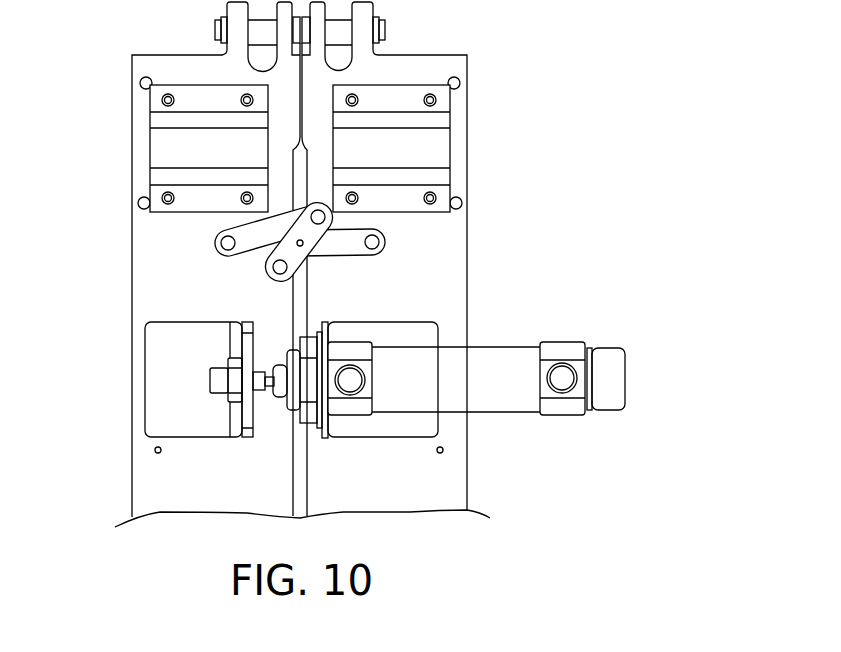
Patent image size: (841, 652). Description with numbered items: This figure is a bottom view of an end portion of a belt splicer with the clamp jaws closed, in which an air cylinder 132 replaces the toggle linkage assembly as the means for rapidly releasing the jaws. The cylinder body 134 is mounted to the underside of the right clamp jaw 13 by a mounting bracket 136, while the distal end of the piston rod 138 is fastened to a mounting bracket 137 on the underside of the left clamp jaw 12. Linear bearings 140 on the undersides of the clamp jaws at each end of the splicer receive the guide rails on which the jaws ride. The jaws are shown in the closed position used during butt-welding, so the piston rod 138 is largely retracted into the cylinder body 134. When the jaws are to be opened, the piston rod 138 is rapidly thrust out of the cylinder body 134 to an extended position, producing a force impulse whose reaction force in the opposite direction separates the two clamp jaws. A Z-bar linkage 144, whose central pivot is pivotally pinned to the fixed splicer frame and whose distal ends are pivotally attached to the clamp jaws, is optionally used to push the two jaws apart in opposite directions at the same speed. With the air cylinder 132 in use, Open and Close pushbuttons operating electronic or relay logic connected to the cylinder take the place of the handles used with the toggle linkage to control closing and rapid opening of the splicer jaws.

The left clamp jaw 12 is at (143, 292).
The right clamp jaw 13 is at (468, 496).
The linear bearings 140 is at (160, 148).
The Z-bar linkage 144 is at (333, 260).
The mounting bracket 137 is at (157, 338).
The piston rod 138 is at (273, 382).
The mounting bracket 136 is at (433, 427).
The cylinder body 134 is at (492, 357).
The air cylinder 132 is at (617, 383).